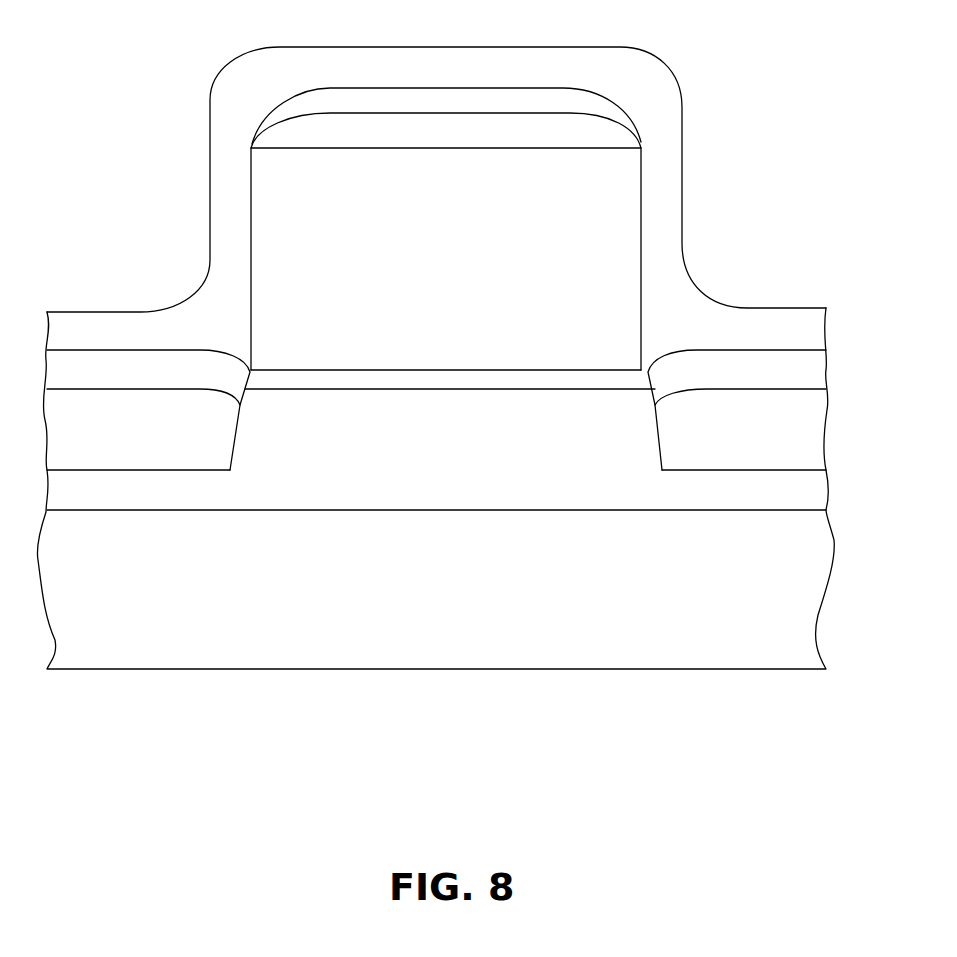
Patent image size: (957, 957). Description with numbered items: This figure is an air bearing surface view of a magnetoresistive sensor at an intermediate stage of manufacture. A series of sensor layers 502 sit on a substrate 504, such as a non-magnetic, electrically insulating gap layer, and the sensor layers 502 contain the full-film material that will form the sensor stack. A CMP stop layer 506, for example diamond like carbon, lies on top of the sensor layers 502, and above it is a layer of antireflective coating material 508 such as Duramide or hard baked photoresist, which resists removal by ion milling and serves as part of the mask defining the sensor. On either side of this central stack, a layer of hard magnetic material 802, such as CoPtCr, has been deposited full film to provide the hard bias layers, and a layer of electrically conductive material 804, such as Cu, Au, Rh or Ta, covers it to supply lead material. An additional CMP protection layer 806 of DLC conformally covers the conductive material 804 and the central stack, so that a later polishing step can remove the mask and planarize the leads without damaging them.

The sensor layers 502 is at (497, 447).
The substrate 504 is at (507, 587).
The CMP stop layer 506 is at (487, 380).
The antireflective coating layer 508 is at (507, 243).
The hard magnetic material layer 802 is at (505, 131).
The electrically conductive material layer 804 is at (505, 97).
The CMP protection layer 806 is at (202, 297).